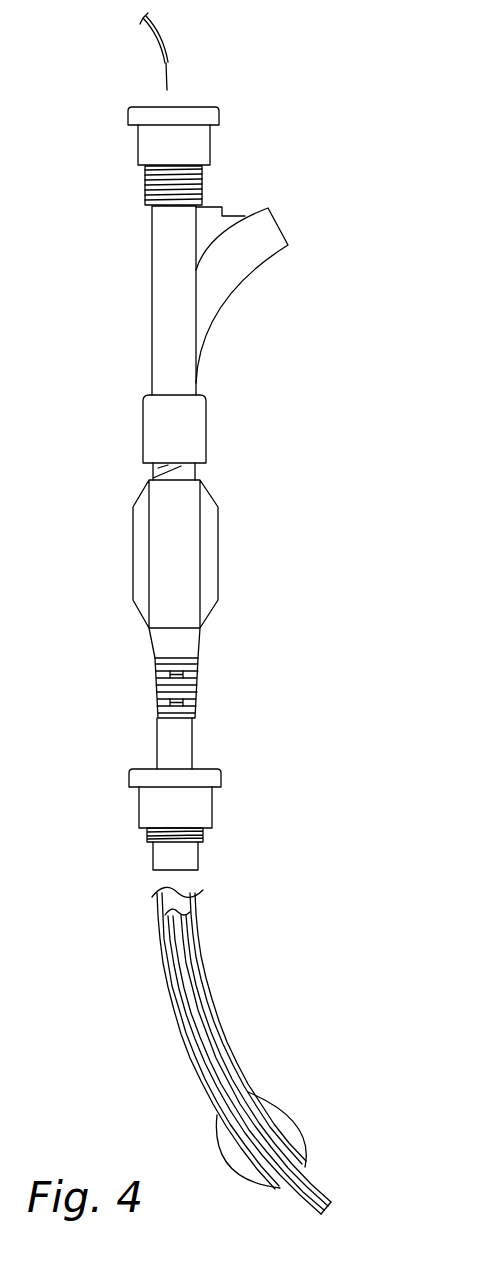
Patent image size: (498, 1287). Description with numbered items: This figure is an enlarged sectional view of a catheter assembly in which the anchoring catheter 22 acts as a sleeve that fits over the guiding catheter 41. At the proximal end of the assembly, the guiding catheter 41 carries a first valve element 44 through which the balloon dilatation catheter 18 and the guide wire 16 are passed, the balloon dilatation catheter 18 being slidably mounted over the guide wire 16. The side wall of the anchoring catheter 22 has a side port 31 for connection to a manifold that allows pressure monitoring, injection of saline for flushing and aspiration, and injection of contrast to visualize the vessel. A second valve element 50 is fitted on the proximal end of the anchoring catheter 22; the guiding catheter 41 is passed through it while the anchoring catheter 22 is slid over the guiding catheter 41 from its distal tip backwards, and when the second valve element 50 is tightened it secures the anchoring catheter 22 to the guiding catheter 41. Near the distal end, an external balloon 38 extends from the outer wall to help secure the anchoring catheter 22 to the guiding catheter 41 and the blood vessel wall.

The guide wire 16 is at (168, 76).
The balloon dilatation catheter 18 is at (155, 43).
The anchoring catheter 22 is at (160, 932).
The side port 31 is at (246, 281).
The second external balloon 38 is at (296, 1125).
The guiding catheter 41 is at (303, 1197).
The first valve element 44 is at (211, 144).
The second valve element 50 is at (213, 806).